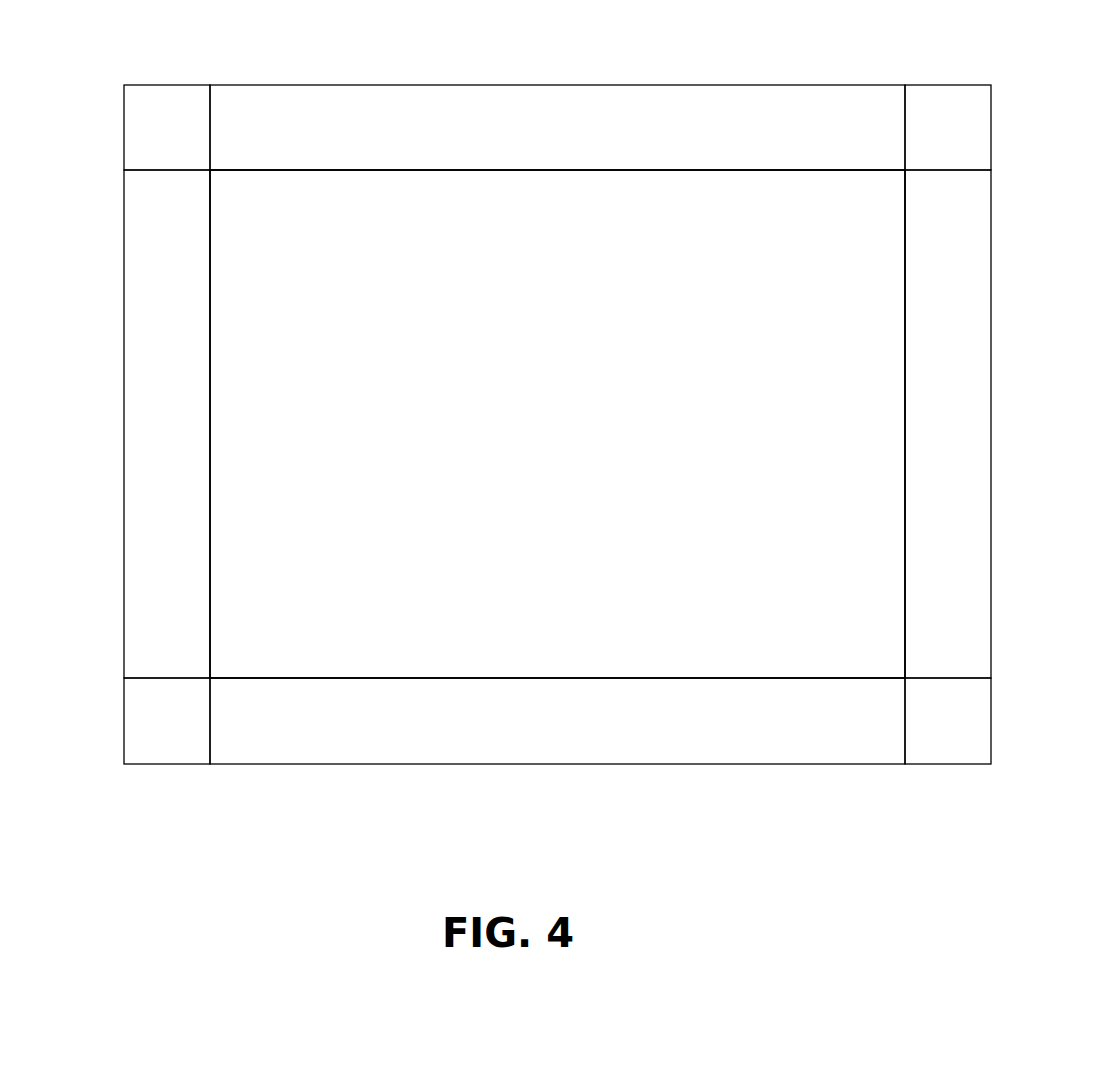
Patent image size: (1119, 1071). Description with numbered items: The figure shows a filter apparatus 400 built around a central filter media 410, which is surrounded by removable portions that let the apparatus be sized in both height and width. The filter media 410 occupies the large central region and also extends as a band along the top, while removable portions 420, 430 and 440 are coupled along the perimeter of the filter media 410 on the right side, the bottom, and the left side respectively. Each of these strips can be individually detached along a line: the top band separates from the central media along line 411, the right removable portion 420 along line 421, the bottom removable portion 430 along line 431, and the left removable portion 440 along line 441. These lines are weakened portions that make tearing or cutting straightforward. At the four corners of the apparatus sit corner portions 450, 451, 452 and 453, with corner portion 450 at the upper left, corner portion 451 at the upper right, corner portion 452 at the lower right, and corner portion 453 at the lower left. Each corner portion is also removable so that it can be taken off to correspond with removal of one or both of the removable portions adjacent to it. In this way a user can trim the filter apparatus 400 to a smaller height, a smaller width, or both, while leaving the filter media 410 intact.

The filter apparatus 400 is at (1035, 54).
The filter media 410 is at (557, 381).
The line 411 is at (658, 171).
The removable portion 420 is at (948, 424).
The line 421 is at (905, 435).
The removable portion 430 is at (557, 721).
The line 431 is at (682, 677).
The removable portion 440 is at (167, 424).
The line 441 is at (211, 400).
The corner portion 450 is at (167, 127).
The corner portion 451 is at (948, 127).
The corner portion 452 is at (948, 721).
The corner portion 453 is at (167, 721).